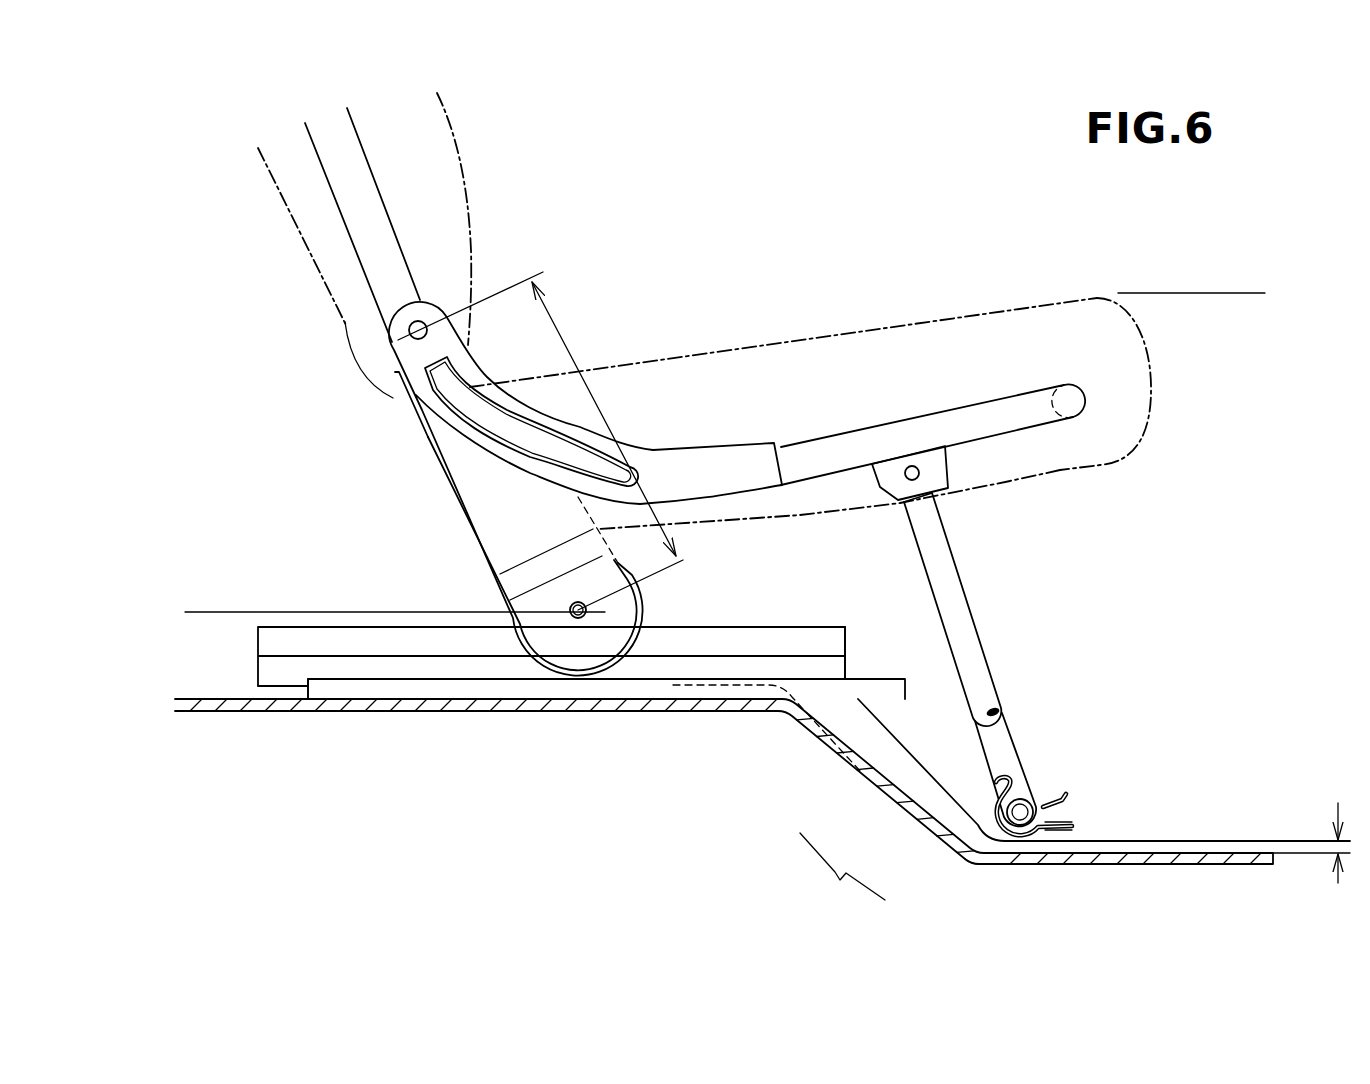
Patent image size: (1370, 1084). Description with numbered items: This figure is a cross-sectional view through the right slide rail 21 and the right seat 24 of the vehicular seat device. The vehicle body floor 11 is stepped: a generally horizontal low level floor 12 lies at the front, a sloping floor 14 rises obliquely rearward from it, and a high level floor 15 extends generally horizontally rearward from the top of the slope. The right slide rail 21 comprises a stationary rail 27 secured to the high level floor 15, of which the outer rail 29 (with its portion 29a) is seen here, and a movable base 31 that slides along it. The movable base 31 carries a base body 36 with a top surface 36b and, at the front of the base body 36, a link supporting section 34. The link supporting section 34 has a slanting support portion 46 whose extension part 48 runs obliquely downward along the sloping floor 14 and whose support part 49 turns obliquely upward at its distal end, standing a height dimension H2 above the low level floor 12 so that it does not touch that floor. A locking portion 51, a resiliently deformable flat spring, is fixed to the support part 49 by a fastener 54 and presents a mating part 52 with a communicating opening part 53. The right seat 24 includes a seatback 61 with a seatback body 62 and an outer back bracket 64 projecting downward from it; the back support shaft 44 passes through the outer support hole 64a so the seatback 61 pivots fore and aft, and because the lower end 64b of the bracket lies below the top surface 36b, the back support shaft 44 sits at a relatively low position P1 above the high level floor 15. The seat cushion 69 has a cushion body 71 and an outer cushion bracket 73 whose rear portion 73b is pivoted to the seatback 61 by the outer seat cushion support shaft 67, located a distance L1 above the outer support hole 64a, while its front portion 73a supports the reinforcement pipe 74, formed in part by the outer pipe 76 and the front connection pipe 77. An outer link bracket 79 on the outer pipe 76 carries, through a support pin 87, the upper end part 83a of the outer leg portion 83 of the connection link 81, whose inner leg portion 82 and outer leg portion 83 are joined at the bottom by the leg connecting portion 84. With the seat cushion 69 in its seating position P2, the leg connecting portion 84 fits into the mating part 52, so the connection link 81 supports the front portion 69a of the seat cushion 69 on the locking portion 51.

The vehicle body floor 11 is at (295, 697).
The low level floor 12 is at (1194, 852).
The sloping floor 14 is at (762, 781).
The high level floor 15 is at (684, 692).
The right slide rail 21 is at (350, 623).
The right seat 24 is at (670, 311).
The stationary rail 27 is at (345, 703).
The outer rail 29 is at (403, 690).
The upper surface of lower rail 29a is at (387, 677).
The movable base 31 is at (802, 623).
The link supporting section 34 is at (1075, 804).
The base body 36 is at (755, 632).
The top surface 36b is at (723, 623).
The back support shaft 44 is at (575, 618).
The slanting support portion 46 is at (870, 773).
The extension part 48 is at (905, 737).
The support part 49 is at (1026, 826).
The locking portion 51 is at (977, 858).
The mating part 52 is at (1045, 817).
The opening part 53 is at (1075, 774).
The fastener 54 is at (995, 824).
The seatback 61 is at (313, 272).
The seatback body 62 is at (463, 170).
The outer back bracket 64 is at (463, 472).
The outer support hole 64a is at (580, 602).
The lower end 64b is at (600, 655).
The outer seat cushion support shaft 67 is at (408, 336).
The seat cushion 69 is at (945, 316).
The front portion 69a is at (1053, 300).
The cushion body 71 is at (818, 338).
The outer cushion bracket 73 is at (527, 470).
The front portion 73a is at (718, 452).
The rear portion 73b is at (398, 367).
The reinforcement pipe 74 is at (1027, 393).
The outer pipe 76 is at (845, 438).
The front connection pipe 77 is at (1090, 393).
The outer link bracket 79 is at (918, 461).
The connection link 81 is at (993, 596).
The inner leg portion 82 is at (1004, 736).
The outer leg portion 83 is at (967, 628).
The upper end part 83a is at (917, 507).
The leg connecting portion 84 is at (1034, 794).
The support pin 87 is at (920, 478).
The distance L1 is at (573, 353).
The low position P1 is at (376, 612).
The seating position P2 is at (1211, 293).
The height dimension H2 is at (1335, 828).